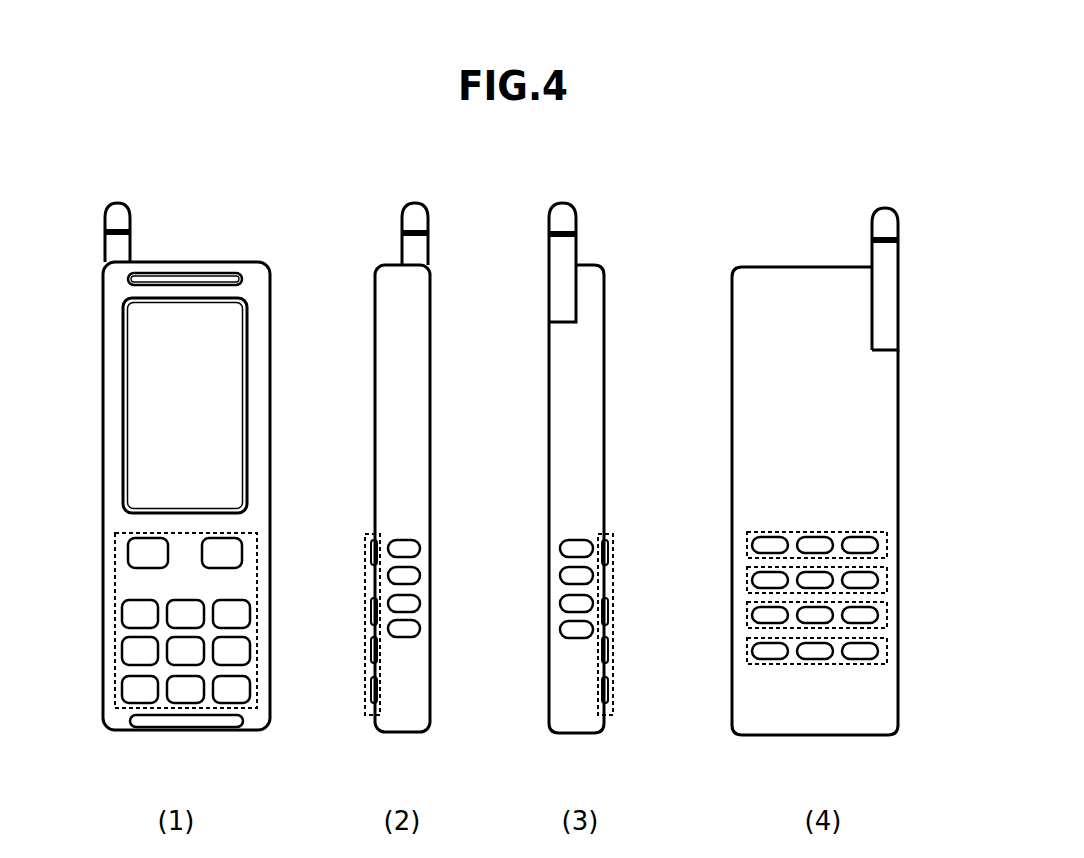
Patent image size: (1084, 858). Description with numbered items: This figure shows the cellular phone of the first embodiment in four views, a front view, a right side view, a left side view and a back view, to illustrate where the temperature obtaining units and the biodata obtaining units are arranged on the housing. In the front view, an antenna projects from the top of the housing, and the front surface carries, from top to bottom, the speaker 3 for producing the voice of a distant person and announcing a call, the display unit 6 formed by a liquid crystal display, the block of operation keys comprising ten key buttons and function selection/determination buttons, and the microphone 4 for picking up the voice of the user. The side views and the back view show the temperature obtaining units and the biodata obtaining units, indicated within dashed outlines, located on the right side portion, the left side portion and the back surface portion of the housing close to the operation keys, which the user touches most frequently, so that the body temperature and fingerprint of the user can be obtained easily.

The speaker 3 is at (160, 273).
The microphone 4 is at (145, 728).
The display unit 6 is at (247, 335).